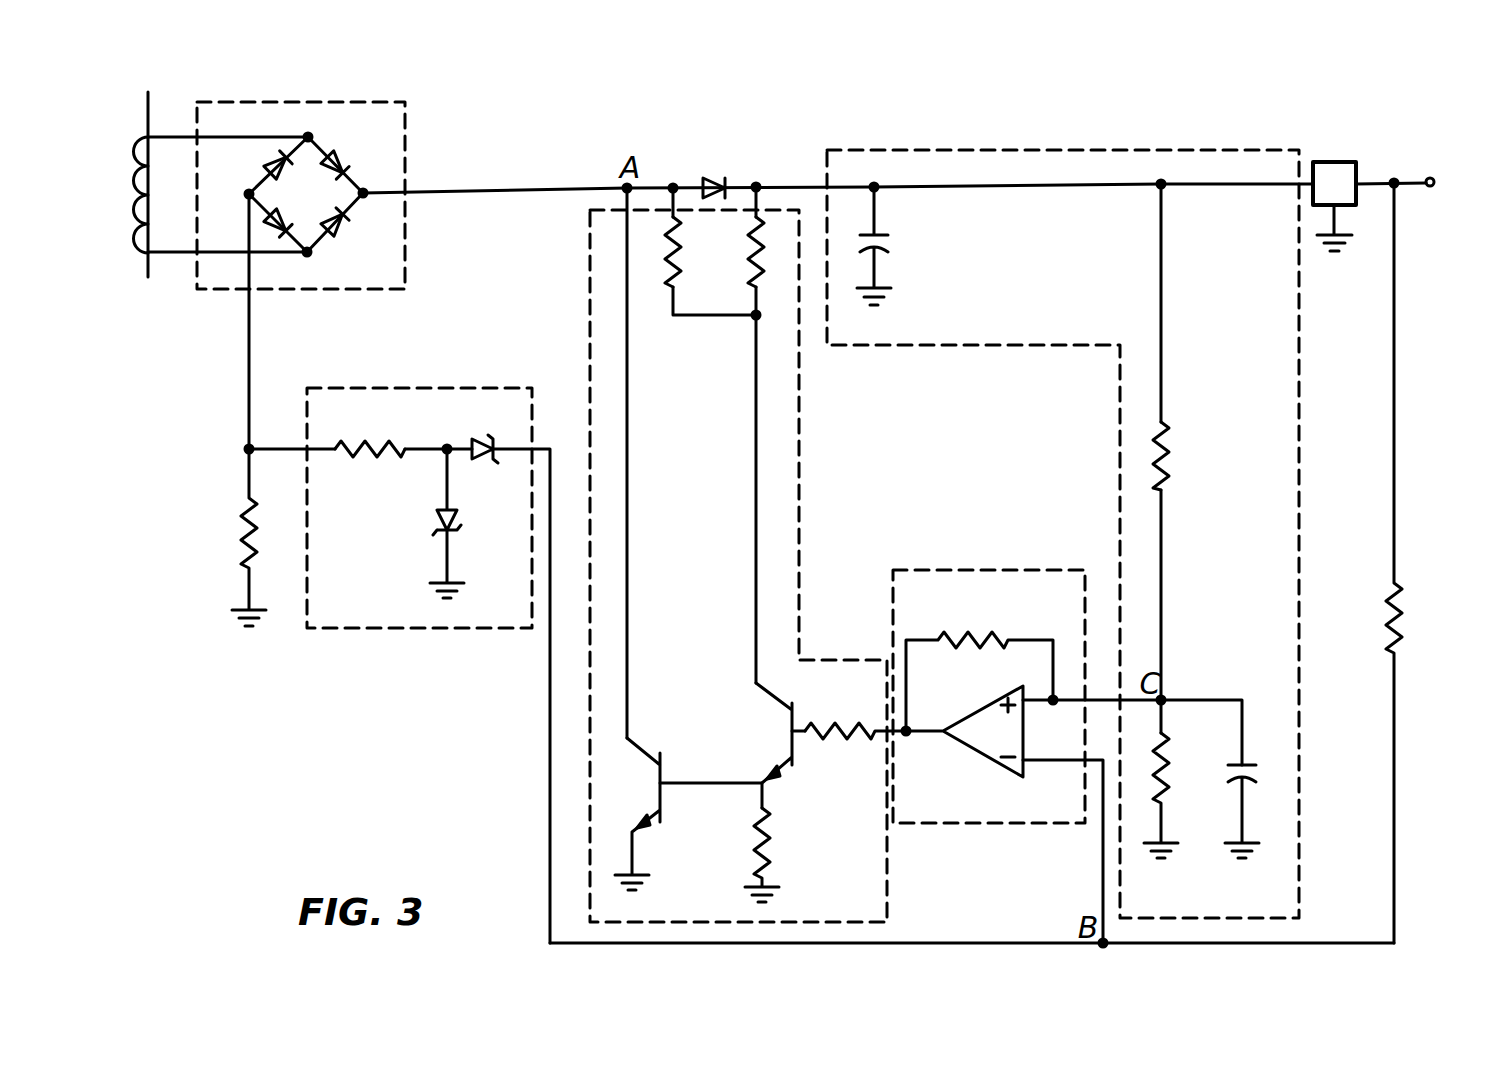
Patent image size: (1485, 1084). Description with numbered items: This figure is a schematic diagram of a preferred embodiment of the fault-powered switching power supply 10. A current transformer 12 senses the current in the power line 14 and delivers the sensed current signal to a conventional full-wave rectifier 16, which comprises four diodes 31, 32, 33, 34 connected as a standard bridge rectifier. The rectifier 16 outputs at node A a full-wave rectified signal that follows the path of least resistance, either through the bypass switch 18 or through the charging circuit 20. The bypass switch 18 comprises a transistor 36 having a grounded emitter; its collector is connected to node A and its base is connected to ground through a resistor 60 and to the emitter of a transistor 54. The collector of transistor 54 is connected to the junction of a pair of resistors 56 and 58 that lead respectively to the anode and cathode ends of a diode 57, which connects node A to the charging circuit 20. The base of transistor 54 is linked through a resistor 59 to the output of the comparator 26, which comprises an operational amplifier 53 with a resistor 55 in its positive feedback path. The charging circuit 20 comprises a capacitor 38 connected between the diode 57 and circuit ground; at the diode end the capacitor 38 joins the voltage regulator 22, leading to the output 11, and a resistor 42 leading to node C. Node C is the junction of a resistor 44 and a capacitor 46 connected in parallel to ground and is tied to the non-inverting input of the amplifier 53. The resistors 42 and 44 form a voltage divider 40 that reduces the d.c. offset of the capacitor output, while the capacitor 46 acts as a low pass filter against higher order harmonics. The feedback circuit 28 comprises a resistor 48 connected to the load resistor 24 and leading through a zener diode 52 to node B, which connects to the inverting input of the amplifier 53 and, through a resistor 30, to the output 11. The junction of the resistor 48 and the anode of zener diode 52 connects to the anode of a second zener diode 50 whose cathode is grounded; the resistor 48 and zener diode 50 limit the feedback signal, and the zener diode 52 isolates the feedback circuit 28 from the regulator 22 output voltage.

The power supply 10 is at (801, 142).
The output 11 is at (1424, 186).
The current transformer 12 is at (136, 250).
The power line 14 is at (146, 115).
The full-wave rectifier 16 is at (405, 185).
The bypass switch 18 is at (893, 912).
The charging circuit 20 is at (973, 150).
The voltage regulator 22 is at (1338, 166).
The load resistor 24 is at (244, 534).
The comparator 26 is at (982, 824).
The feedback circuit 28 is at (336, 628).
The resistor 30 is at (1386, 621).
The diode 31 is at (262, 154).
The diode 32 is at (338, 171).
The diode 33 is at (343, 224).
The diode 34 is at (280, 218).
The transistor 36 is at (662, 768).
The capacitor 38 is at (880, 236).
The voltage divider 40 is at (1182, 680).
The resistor 42 is at (1174, 460).
The resistor 44 is at (1173, 768).
The capacitor 46 is at (1238, 788).
The resistor 48 is at (374, 442).
The zener diode 50 is at (434, 523).
The zener diode 52 is at (489, 436).
The operational amplifier 53 is at (988, 753).
The transistor 54 is at (764, 714).
The resistor 55 is at (960, 632).
The resistor 56 is at (678, 257).
The diode 57 is at (716, 178).
The resistor 58 is at (770, 268).
The resistor 59 is at (836, 728).
The resistor 60 is at (770, 846).